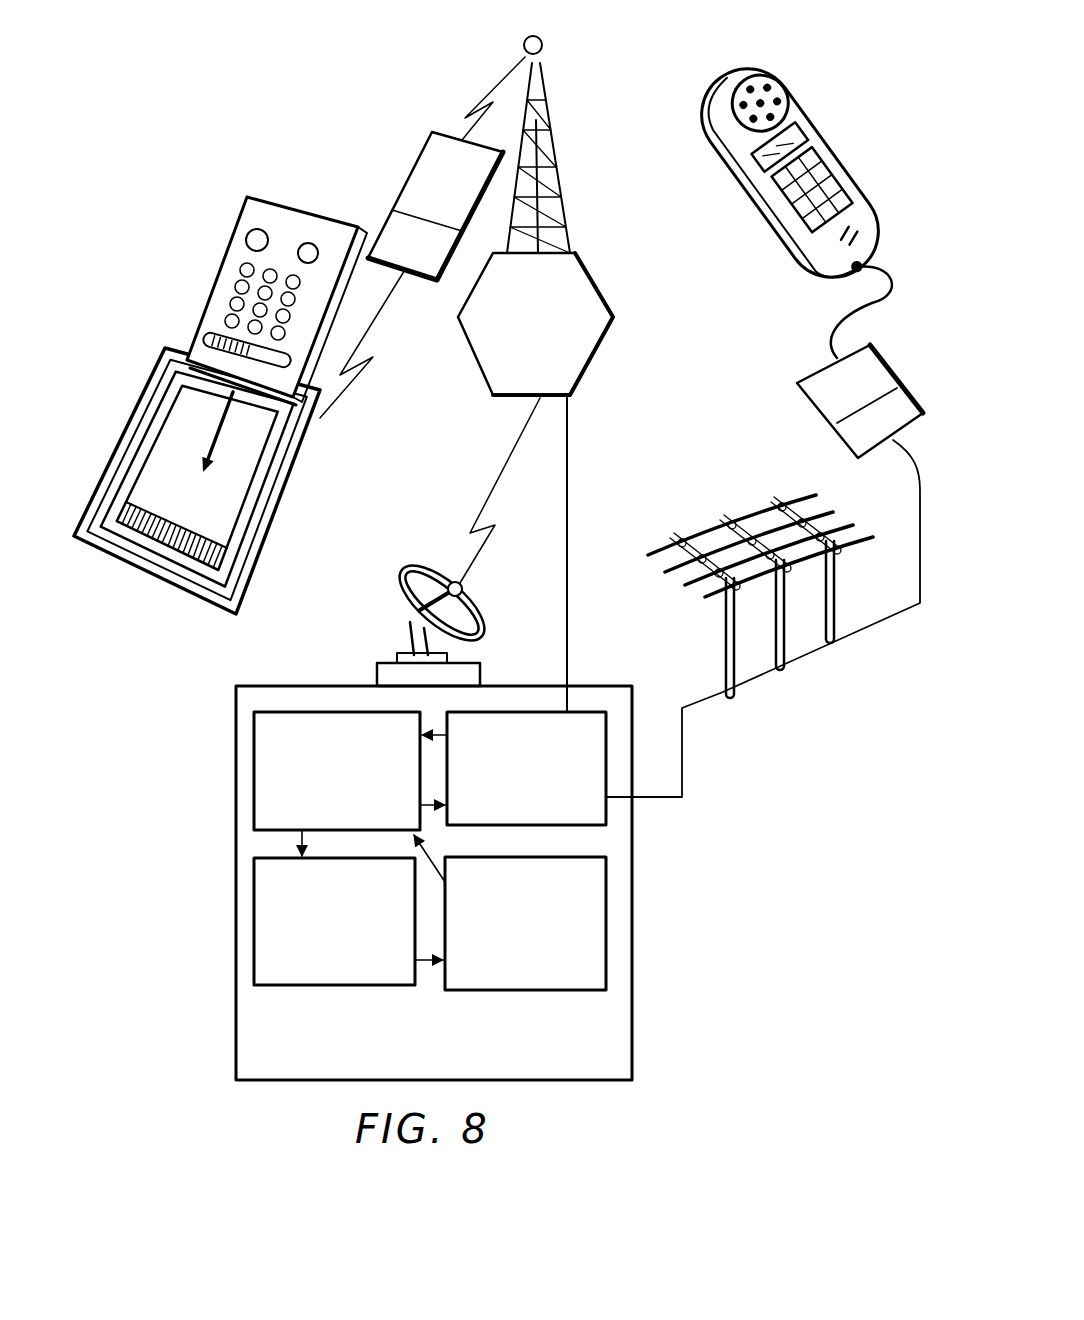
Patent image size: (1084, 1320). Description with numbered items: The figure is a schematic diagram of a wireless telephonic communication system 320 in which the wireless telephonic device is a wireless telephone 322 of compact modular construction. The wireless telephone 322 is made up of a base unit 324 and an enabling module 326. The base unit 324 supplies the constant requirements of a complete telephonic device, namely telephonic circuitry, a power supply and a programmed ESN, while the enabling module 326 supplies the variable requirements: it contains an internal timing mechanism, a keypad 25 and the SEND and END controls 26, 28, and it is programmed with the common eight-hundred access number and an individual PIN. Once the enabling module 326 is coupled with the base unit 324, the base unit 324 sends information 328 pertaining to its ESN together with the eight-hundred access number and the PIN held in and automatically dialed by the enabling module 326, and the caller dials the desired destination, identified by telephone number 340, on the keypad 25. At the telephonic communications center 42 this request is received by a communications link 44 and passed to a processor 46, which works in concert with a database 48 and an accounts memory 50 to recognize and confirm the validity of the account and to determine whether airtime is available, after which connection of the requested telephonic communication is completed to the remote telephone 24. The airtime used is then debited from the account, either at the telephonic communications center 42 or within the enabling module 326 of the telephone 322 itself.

The remote telephone 24 is at (822, 138).
The keypad 25 is at (232, 300).
The SEND control 26 is at (260, 229).
The END control 28 is at (313, 243).
The telephonic communications center 42 is at (236, 832).
The communications link 44 is at (527, 712).
The processor 46 is at (318, 712).
The database 48 is at (254, 963).
The accounts memory 50 is at (607, 946).
The wireless telephonic communication system 320 is at (290, 623).
The wireless telephone 322 is at (296, 502).
The base unit 324 is at (262, 556).
The enabling module 326 is at (226, 253).
The information 328 is at (414, 166).
The telephone number 340 is at (432, 278).